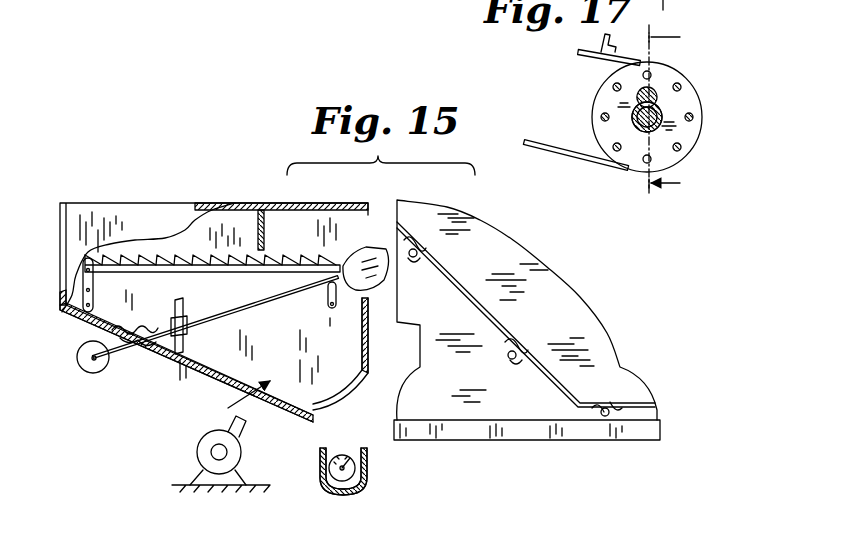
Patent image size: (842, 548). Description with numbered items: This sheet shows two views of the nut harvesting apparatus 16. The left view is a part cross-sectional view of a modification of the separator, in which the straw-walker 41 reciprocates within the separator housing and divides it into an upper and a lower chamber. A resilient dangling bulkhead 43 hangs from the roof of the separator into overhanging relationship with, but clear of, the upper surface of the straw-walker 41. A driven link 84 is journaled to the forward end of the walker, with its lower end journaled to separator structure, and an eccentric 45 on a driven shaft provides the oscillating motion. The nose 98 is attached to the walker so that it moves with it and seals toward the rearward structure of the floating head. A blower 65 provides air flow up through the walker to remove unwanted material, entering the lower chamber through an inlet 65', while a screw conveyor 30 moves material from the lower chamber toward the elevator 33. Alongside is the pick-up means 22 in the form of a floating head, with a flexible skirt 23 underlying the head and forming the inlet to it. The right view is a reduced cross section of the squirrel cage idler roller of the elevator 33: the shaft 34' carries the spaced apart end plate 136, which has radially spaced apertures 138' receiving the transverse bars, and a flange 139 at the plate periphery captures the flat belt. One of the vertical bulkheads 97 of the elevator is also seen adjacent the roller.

In FIG. 15, the resilient dangling bulkhead 43 is at (264, 230).
In FIG. 15, the straw-walker 41 is at (192, 276).
In FIG. 15, the driven link 84 is at (334, 296).
In FIG. 15, the eccentric 45 is at (76, 359).
In FIG. 15, the nose 98 is at (356, 266).
In FIG. 15, the blower 65 is at (209, 454).
In FIG. 15, the inlet 65' is at (262, 413).
In FIG. 15, the screw conveyor 30 is at (374, 462).
In FIG. 15, the pick-up means 22 is at (530, 232).
In FIG. 15, the skirt 23 is at (664, 432).
In FIG. 17, the end plate 136 is at (690, 72).
In FIG. 17, the shaft 34' is at (694, 107).
In FIG. 17, the apertures 138' is at (692, 117).
In FIG. 17, the apparatus 16 is at (684, 111).
In FIG. 17, the vertical bulkhead 97 is at (584, 58).
In FIG. 17, the elevator 33 is at (562, 146).
In FIG. 17, the flange 139 is at (628, 164).